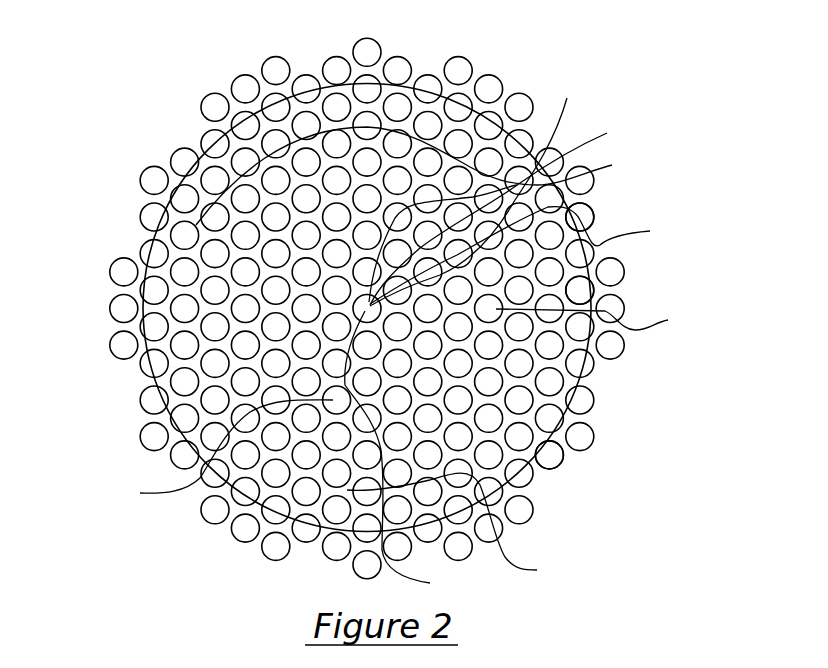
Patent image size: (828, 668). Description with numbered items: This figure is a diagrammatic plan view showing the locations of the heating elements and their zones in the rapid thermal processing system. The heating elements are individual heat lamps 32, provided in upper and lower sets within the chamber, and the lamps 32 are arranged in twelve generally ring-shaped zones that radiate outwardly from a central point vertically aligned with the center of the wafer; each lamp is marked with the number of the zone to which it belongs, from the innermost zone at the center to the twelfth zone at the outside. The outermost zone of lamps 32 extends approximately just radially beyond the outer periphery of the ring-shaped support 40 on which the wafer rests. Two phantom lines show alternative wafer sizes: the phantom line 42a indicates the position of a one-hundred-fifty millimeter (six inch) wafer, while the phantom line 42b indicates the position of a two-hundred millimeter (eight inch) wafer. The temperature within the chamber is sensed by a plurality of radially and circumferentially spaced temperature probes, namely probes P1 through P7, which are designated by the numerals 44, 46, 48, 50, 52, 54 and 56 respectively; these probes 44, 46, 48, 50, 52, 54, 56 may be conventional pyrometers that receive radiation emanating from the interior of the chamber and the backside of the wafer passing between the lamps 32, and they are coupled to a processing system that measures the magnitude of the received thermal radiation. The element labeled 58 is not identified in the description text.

The heat lamps 32 is at (461, 62).
The ring shaped support 40 is at (532, 470).
The phantom line indicating position of 150 mm wafer 42a is at (600, 214).
The phantom line indicating position of 200 mm wafer 42b is at (592, 287).
The temperature probe P1 44 is at (473, 192).
The temperature probe P2 46 is at (418, 214).
The temperature probe P3 48 is at (401, 454).
The temperature probe P4 50 is at (503, 213).
The temperature probe P5 52 is at (222, 452).
The temperature probe P6 54 is at (524, 255).
The temperature probe P7 56 is at (456, 528).
The horizontal line 58 is at (595, 318).